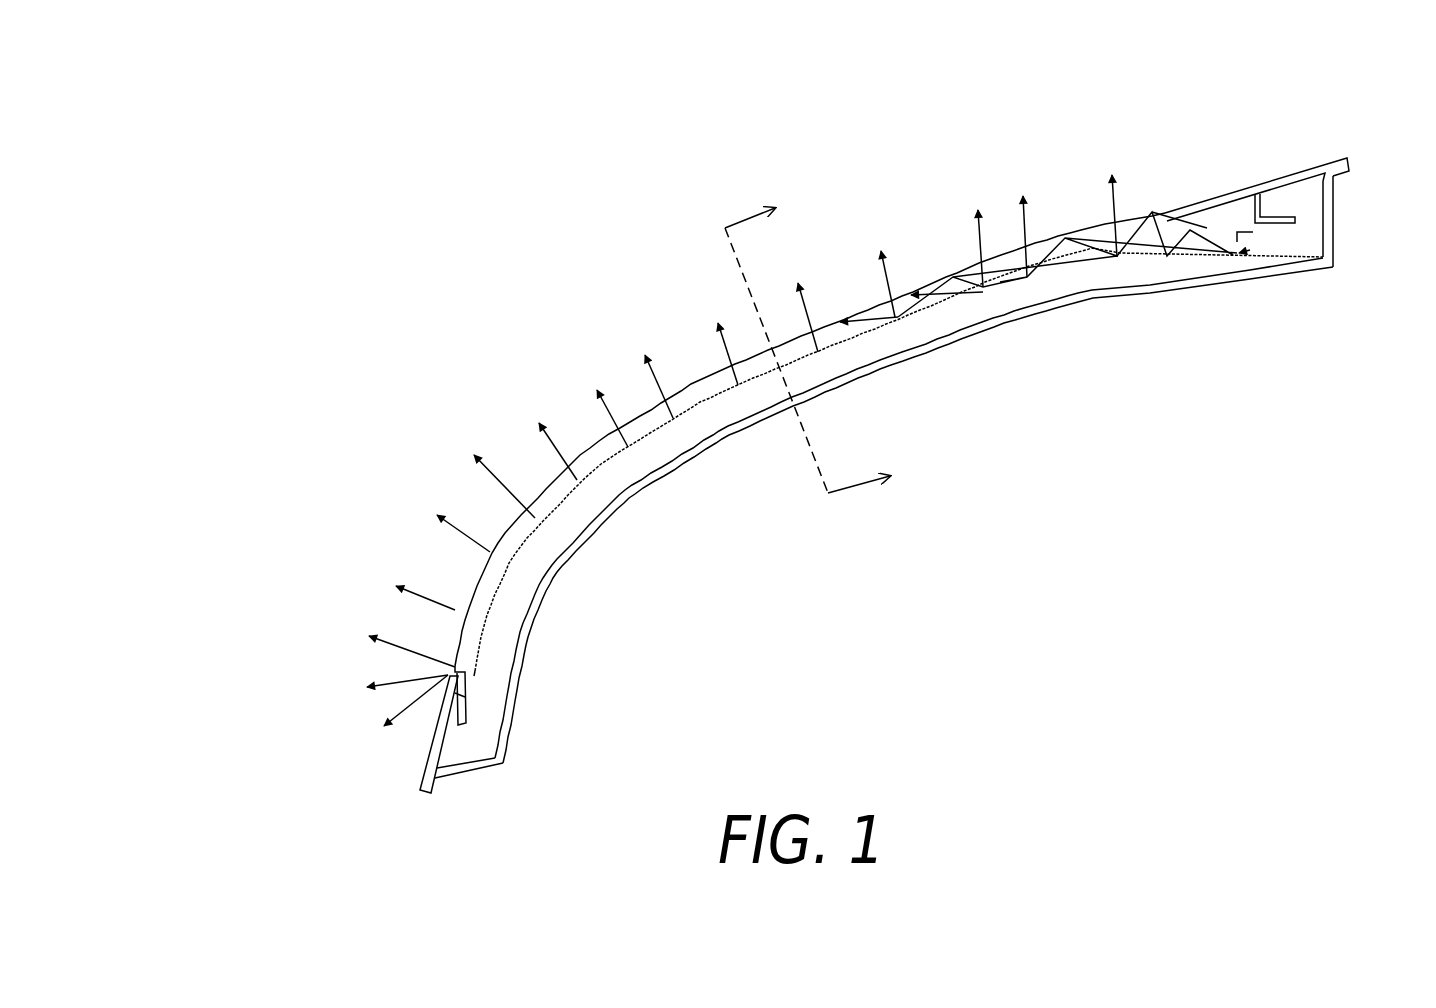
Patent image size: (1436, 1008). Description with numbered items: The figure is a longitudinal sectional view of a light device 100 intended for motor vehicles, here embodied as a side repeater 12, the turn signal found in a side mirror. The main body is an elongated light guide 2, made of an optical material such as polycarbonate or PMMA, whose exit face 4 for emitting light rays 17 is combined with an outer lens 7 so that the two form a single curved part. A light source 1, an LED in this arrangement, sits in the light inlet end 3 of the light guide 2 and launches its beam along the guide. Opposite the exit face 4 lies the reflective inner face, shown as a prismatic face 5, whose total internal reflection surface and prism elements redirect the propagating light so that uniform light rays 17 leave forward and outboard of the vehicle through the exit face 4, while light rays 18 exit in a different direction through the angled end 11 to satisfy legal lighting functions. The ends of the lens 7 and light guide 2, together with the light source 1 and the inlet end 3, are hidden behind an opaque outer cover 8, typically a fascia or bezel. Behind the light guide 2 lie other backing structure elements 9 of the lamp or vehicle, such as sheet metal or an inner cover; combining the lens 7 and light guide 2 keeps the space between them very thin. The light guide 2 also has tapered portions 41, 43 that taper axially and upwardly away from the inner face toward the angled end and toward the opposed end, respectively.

The light device 100 is at (1035, 126).
The light source 1 is at (1270, 258).
The light guide 2 is at (452, 582).
The light inlet end 3 is at (1237, 240).
The exit face 4 is at (643, 415).
The prismatic face 5 is at (913, 317).
The outer lens 7 is at (590, 446).
The outer cover 8 is at (424, 762).
The backing structure elements 9 is at (536, 642).
The angled end 11 is at (447, 677).
The side repeater 12 is at (507, 512).
The light rays 17 is at (455, 610).
The light rays 18 is at (397, 645).
The tapered portion 41 is at (745, 442).
The tapered portion 43 is at (1175, 225).